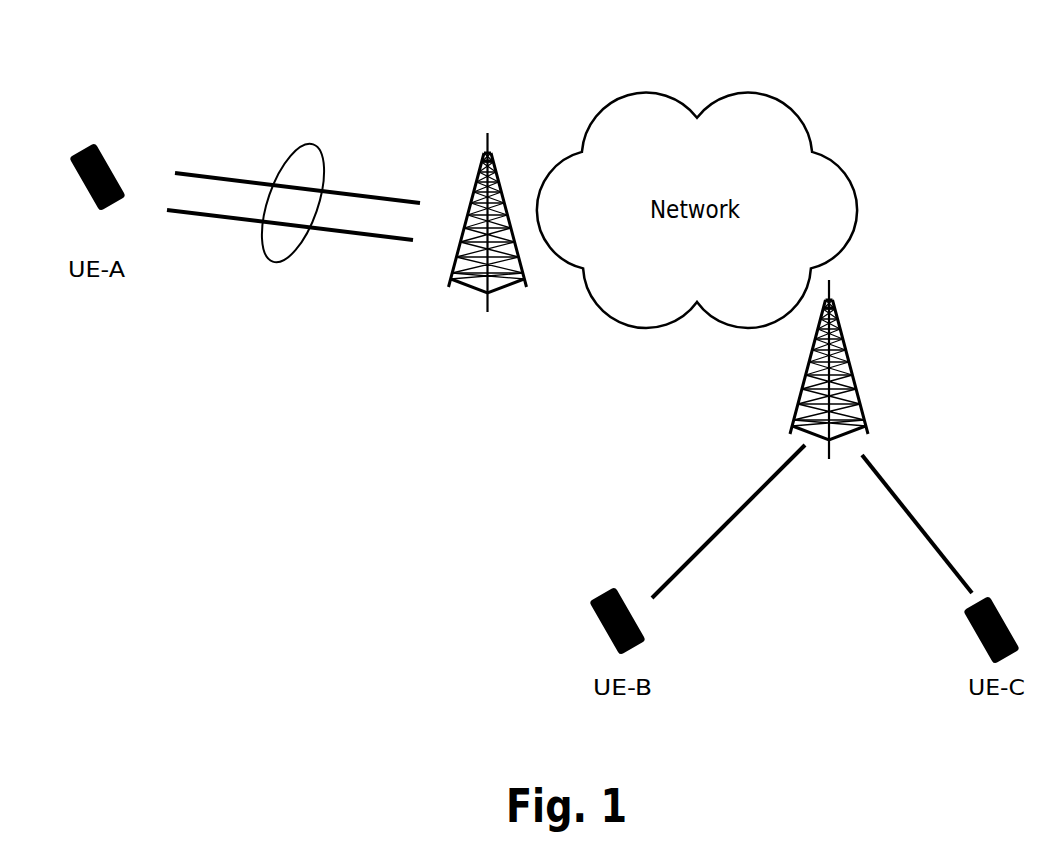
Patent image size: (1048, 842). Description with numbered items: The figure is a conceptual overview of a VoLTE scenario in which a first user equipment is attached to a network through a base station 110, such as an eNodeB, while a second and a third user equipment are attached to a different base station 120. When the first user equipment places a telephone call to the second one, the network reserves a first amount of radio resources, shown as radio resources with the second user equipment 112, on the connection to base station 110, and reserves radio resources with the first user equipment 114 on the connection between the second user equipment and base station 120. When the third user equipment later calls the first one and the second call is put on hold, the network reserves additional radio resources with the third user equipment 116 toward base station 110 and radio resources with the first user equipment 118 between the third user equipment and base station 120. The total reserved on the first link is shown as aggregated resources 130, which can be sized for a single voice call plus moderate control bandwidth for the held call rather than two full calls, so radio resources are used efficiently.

The base station 110 is at (493, 136).
The base station 120 is at (836, 303).
The radio resources w/UE-B 112 is at (301, 179).
The radio resources w/UE-C 116 is at (298, 217).
The radio resources w/UE-A 114 is at (709, 518).
The radio resources w/UE-A 118 is at (928, 510).
The aggregated resources 130 is at (313, 145).